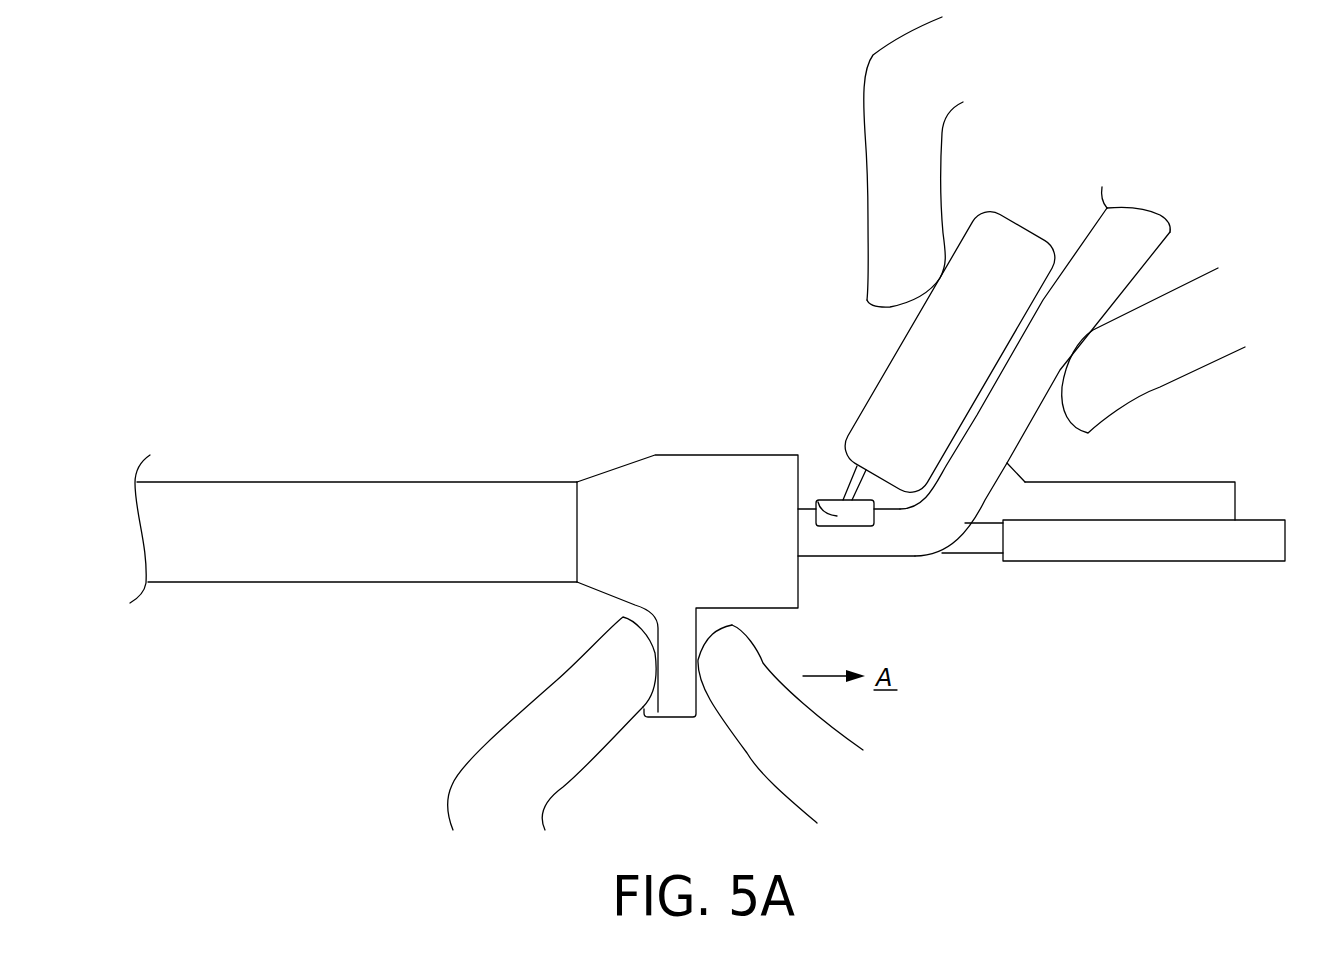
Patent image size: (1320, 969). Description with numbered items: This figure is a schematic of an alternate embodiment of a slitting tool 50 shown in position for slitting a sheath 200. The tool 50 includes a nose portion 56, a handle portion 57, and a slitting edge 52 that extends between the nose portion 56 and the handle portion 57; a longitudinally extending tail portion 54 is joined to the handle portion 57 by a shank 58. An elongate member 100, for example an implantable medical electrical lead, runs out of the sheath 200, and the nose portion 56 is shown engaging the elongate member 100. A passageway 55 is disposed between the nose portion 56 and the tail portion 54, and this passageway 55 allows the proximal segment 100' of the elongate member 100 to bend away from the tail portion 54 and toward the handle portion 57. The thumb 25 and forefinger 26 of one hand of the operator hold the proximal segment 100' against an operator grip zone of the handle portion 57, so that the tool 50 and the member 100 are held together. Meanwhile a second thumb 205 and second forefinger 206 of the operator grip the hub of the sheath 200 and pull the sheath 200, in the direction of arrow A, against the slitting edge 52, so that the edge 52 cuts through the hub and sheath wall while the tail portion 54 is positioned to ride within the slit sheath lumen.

The sheath 200 is at (346, 445).
The elongate member 100 is at (856, 562).
The proximal segment 100' is at (1059, 371).
The handle portion 57 is at (907, 383).
The nose portion 56 is at (815, 497).
The slitting edge 52 is at (851, 480).
The shank 58 is at (1013, 498).
The tail portion 54 is at (1165, 540).
The passageway 55 is at (972, 538).
The forefinger 26 is at (873, 136).
The thumb 25 is at (1155, 378).
The second forefinger 206 is at (563, 707).
The second thumb 205 is at (747, 718).
The slitting tool 50 is at (1050, 120).